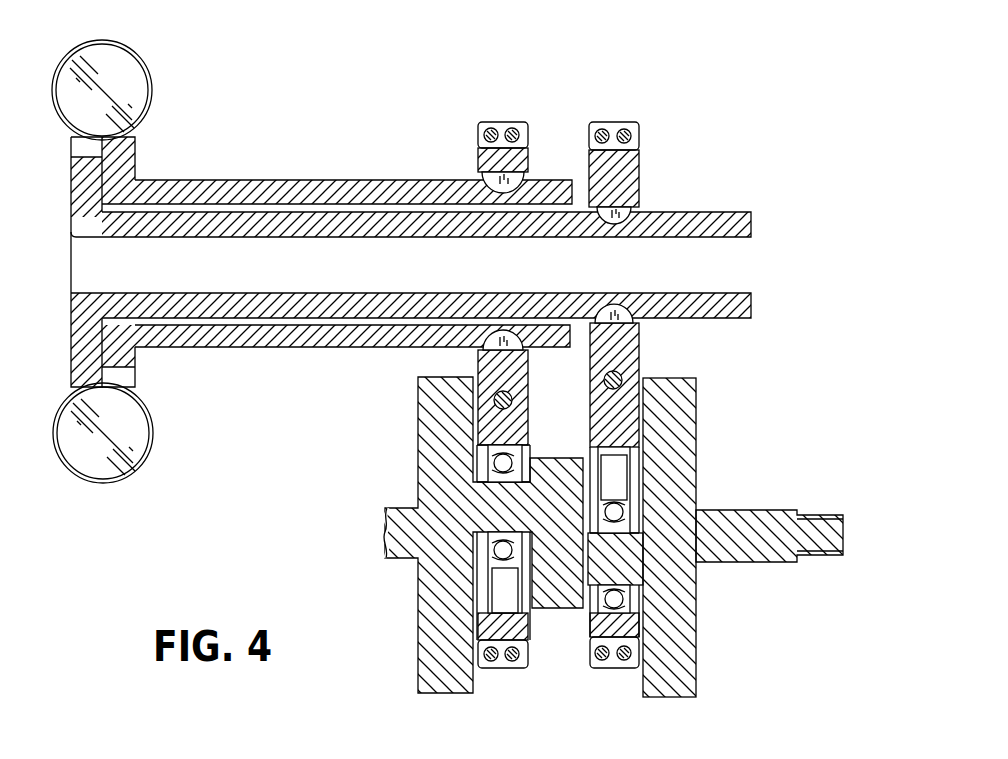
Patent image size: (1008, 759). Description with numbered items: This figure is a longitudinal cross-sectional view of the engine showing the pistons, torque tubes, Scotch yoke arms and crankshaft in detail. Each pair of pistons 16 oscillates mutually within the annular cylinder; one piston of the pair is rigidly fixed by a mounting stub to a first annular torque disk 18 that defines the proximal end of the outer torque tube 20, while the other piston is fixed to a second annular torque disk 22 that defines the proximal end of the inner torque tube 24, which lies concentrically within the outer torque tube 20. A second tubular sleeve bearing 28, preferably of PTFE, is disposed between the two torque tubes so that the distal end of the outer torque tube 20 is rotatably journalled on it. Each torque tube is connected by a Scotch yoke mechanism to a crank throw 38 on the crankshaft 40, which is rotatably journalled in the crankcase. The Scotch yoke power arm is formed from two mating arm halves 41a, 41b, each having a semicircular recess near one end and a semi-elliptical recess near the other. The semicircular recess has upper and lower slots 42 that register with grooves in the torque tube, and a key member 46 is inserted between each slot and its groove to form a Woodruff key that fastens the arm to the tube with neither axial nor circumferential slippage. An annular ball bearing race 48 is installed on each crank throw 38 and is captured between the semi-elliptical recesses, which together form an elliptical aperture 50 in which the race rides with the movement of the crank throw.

The piston 16 is at (128, 76).
The first annular torque disk 18 is at (127, 158).
The outer torque tube 20 is at (303, 181).
The second annular torque disk 22 is at (82, 188).
The inner torque tube 24 is at (293, 300).
The second tubular sleeve bearing 28 is at (233, 211).
The crank throw 38 is at (513, 486).
The crankshaft 40 is at (398, 510).
The arm half 41a is at (478, 160).
The arm half 41b is at (640, 178).
The slot 42 is at (529, 173).
The key member 46 is at (490, 185).
The ball bearing race 48 is at (529, 442).
The elliptical aperture 50 is at (634, 454).